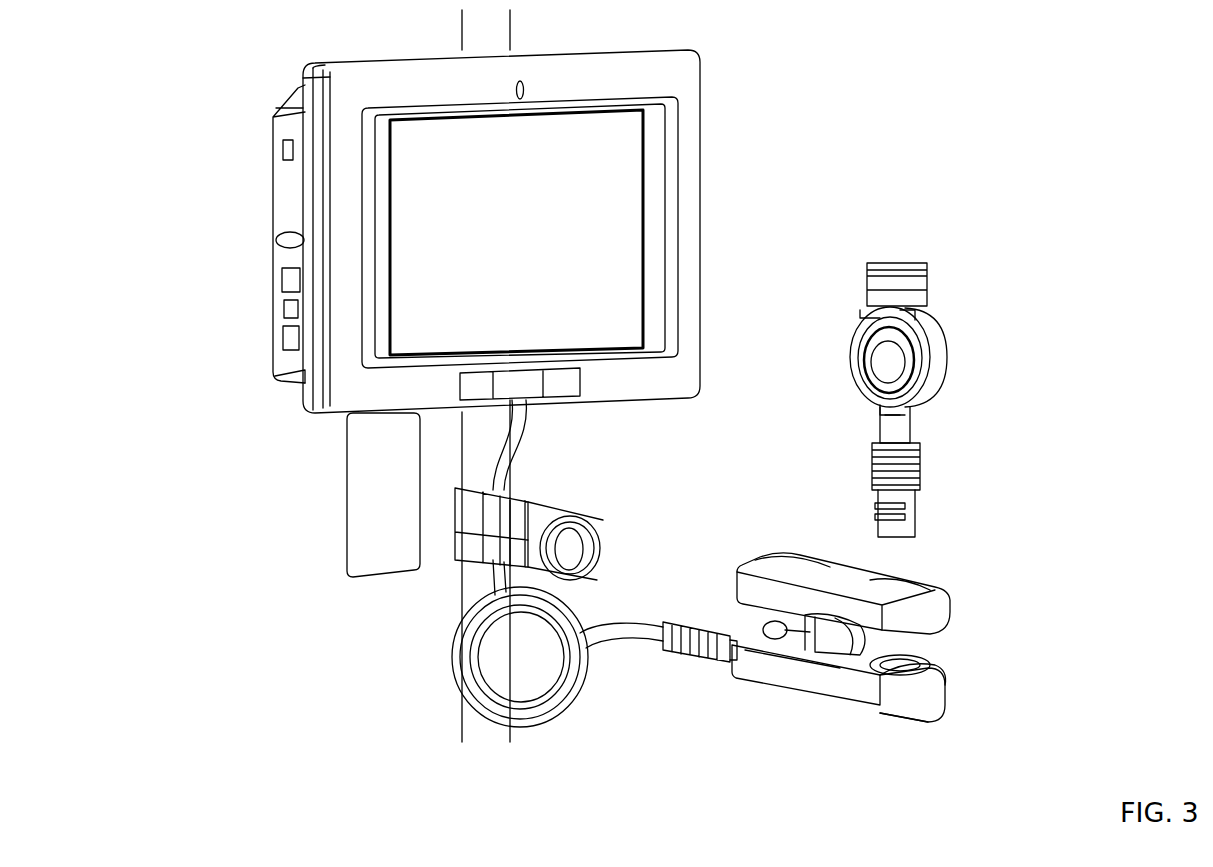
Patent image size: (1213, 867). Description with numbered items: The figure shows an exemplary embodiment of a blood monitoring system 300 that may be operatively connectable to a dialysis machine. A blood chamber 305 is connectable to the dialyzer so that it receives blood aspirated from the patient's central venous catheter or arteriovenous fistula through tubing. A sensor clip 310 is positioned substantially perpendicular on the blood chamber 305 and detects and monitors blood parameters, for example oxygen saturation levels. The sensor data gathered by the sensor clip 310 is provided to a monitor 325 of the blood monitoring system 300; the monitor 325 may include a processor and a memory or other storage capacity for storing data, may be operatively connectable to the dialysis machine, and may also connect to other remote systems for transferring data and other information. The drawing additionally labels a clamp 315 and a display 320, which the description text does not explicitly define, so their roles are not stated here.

The blood monitoring system 300 is at (1003, 41).
The blood chamber 305 is at (956, 277).
The sensor clip 310 is at (961, 559).
The pole clamp 315 is at (550, 443).
The monitor display 320 is at (731, 77).
The monitor 325 is at (217, 220).